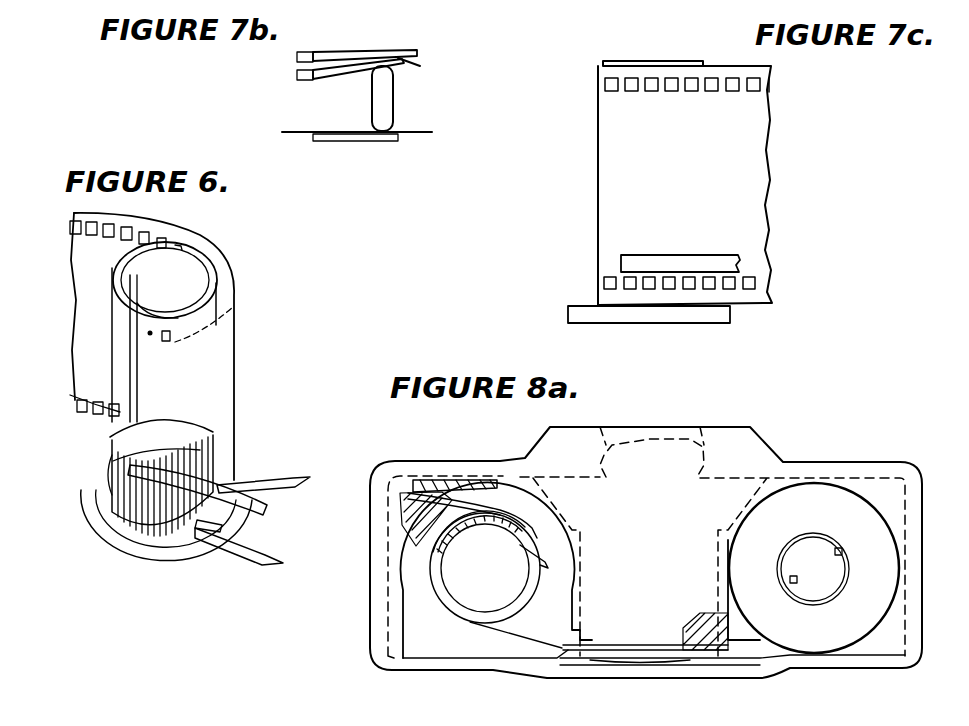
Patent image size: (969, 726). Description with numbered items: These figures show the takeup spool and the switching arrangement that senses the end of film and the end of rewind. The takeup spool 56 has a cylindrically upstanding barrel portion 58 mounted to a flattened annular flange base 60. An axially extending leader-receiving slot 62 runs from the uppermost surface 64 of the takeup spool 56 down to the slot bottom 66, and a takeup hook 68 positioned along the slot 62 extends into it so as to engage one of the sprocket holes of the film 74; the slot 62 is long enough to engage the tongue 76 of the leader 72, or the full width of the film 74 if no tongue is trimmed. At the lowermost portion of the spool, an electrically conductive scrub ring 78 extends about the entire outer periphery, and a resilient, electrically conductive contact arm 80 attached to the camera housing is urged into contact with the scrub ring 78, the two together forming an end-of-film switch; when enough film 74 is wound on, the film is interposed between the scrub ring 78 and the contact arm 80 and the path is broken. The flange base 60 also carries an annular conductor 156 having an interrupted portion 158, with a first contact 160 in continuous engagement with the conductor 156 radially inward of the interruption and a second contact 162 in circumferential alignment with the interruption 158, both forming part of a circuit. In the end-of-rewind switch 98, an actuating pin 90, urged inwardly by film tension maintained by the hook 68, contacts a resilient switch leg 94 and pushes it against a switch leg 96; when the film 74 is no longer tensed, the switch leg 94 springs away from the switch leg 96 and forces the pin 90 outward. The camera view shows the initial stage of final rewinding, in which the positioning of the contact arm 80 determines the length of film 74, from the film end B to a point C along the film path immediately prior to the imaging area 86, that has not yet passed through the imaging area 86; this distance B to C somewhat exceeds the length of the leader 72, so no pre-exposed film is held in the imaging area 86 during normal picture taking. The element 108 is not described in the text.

In FIG. 7B, the switch leg 96 is at (346, 56).
In FIG. 7B, the switch leg 94 is at (352, 72).
In FIG. 7B, the end-of-rewind switch 98 is at (423, 44).
In FIG. 7B, the actuating pin 90 is at (393, 97).
In FIG. 8A, the actuating pin 90 is at (710, 635).
In FIG. 7B, the film 74 is at (422, 136).
In FIG. 7C, the film 74 is at (620, 148).
In FIG. 8A, the film 74 is at (627, 660).
In FIG. 7C, the contact arm 80 is at (712, 261).
In FIG. 6, the contact arm 80 is at (260, 523).
In FIG. 8A, the contact arm 80 is at (500, 505).
In FIG. 7C, the scrub ring 78 is at (600, 305).
In FIG. 6, the scrub ring 78 is at (217, 443).
In FIG. 6, the leader 72 is at (203, 231).
In FIG. 6, the uppermost surface 64 is at (208, 268).
In FIG. 6, the barrel portion 58 is at (127, 313).
In FIG. 6, the leader-receiving slot 62 is at (130, 338).
In FIG. 6, the tongue 76 is at (143, 378).
In FIG. 6, the takeup hook 68 is at (151, 338).
In FIG. 6, the annular conductor 156 is at (118, 520).
In FIG. 6, the flange base 60 is at (90, 503).
In FIG. 6, the takeup spool 56 is at (82, 465).
In FIG. 8A, the takeup spool 56 is at (470, 614).
In FIG. 6, the slot bottom 66 is at (107, 438).
In FIG. 6, the first contact 160 is at (277, 477).
In FIG. 6, the second contact 162 is at (237, 560).
In FIG. 6, the interrupted portion 158 is at (180, 543).
In FIG. 8A, the imaging area 86 is at (643, 592).
In FIG. 8A, the take-up spool 108 is at (806, 580).
In FIG. 8A, the film end B is at (484, 556).
In FIG. 8A, the point along film path C is at (558, 652).